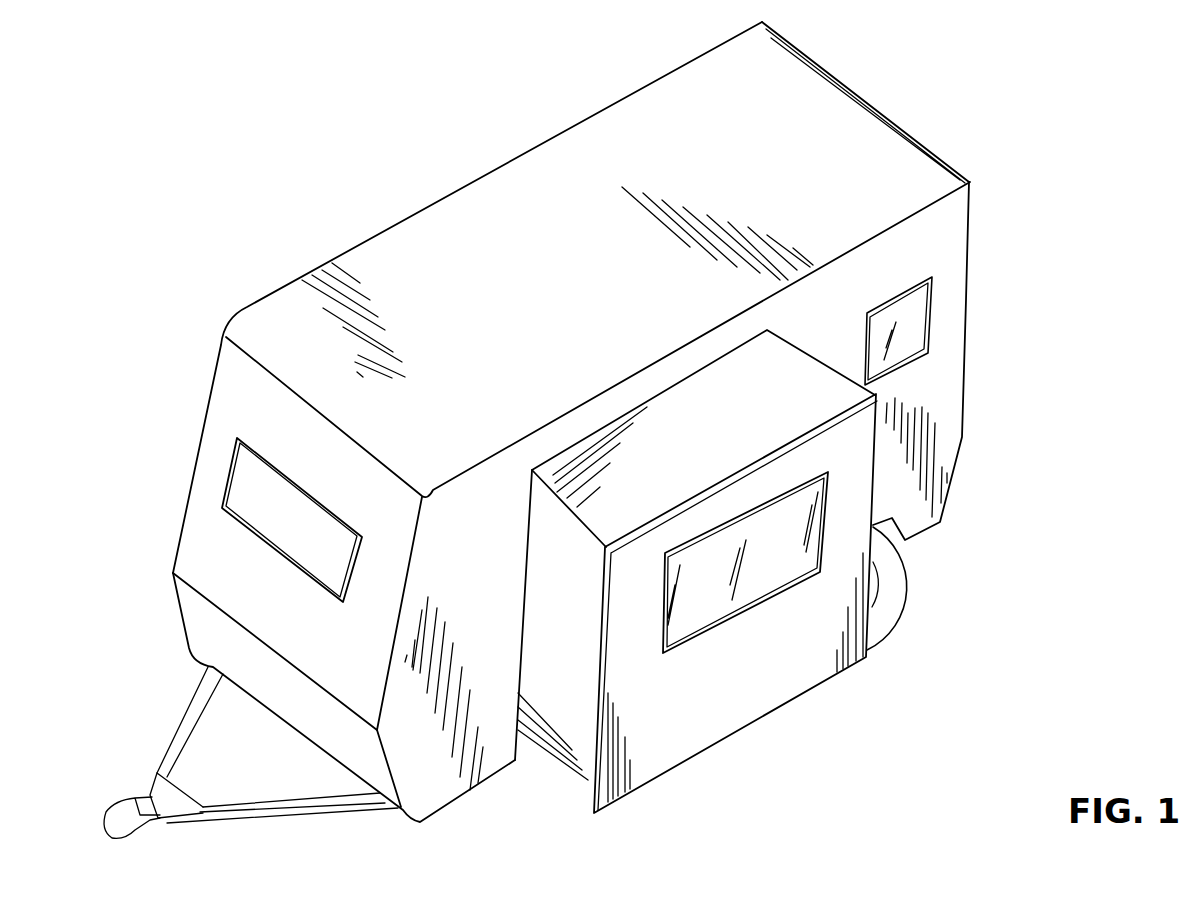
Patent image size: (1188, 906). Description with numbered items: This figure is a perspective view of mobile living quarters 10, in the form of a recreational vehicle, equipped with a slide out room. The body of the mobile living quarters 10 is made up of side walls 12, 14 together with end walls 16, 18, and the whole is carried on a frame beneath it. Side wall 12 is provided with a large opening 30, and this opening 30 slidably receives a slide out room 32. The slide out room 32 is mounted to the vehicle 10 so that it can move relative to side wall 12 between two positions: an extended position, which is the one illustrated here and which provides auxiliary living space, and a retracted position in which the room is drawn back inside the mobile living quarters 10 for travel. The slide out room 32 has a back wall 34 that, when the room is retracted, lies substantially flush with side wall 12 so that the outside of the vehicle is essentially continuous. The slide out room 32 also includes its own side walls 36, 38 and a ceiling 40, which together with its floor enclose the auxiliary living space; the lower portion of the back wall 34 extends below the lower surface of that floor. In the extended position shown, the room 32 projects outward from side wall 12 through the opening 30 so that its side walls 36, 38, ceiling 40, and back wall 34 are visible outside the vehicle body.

The mobile living quarters 10 is at (327, 188).
The side wall 12 is at (950, 373).
The side wall 14 is at (497, 168).
The end wall 16 is at (272, 615).
The end wall 18 is at (873, 106).
The large opening 30 is at (655, 408).
The slide out room 32 is at (810, 680).
The back wall 34 is at (692, 708).
The side wall 36 is at (811, 363).
The side wall 38 is at (567, 700).
The ceiling 40 is at (685, 458).